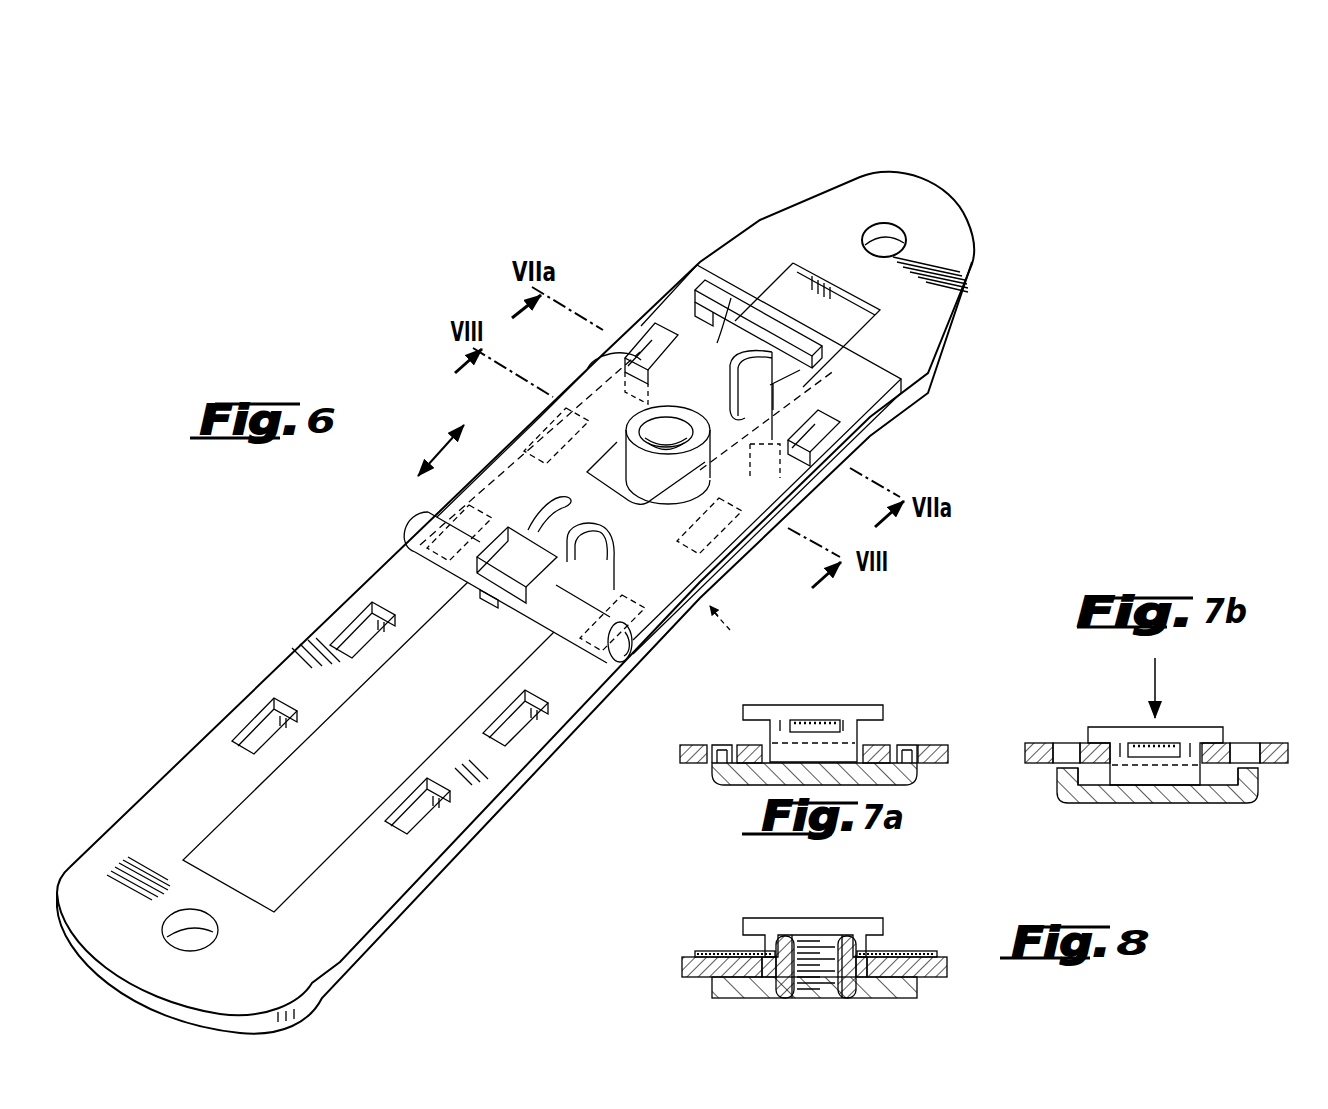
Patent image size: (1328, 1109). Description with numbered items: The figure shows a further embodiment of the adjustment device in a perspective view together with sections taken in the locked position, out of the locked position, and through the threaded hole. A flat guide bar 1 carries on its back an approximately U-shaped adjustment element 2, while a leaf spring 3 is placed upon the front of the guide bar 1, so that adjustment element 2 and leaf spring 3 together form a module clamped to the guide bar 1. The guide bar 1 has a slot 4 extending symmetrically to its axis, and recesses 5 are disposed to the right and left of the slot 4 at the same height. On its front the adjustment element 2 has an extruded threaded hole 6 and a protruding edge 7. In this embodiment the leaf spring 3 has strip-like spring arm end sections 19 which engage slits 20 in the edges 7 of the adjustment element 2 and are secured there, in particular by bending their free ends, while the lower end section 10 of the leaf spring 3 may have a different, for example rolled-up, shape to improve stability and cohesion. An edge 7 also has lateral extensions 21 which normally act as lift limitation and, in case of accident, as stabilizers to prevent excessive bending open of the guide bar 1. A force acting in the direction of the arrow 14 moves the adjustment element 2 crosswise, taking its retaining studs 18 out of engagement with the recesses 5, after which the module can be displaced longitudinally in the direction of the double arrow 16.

In FIG. 6, the guide bar 1 is at (318, 626).
In FIG. 7A, the guide bar 1 is at (678, 753).
In FIG. 7B, the guide bar 1 is at (1023, 760).
In FIG. 8, the guide bar 1 is at (683, 950).
In FIG. 6, the adjustment element 2 is at (725, 631).
In FIG. 7A, the adjustment element 2 is at (710, 776).
In FIG. 7B, the adjustment element 2 is at (1094, 808).
In FIG. 8, the adjustment element 2 is at (710, 992).
In FIG. 6, the leaf spring 3 is at (576, 372).
In FIG. 7A, the leaf spring 3 is at (808, 716).
In FIG. 7B, the leaf spring 3 is at (1162, 739).
In FIG. 8, the leaf spring 3 is at (905, 950).
In FIG. 6, the slot 4 is at (246, 842).
In FIG. 7A, the slot 4 is at (776, 738).
In FIG. 7B, the slot 4 is at (1115, 776).
In FIG. 8, the slot 4 is at (773, 970).
In FIG. 6, the recesses 5 is at (368, 630).
In FIG. 7A, the recesses 5 is at (694, 746).
In FIG. 7B, the recesses 5 is at (1066, 748).
In FIG. 6, the threaded hole 6 is at (686, 464).
In FIG. 8, the threaded hole 6 is at (838, 940).
In FIG. 6, the edge 7 is at (530, 590).
In FIG. 7A, the edge 7 is at (862, 738).
In FIG. 7B, the edge 7 is at (1118, 748).
In FIG. 6, the lower end section 10 is at (412, 531).
In FIG. 6, the arrow 14 is at (758, 318).
In FIG. 7B, the arrow 14 is at (1154, 658).
In FIG. 6, the double arrow 16 is at (484, 471).
In FIG. 6, the retaining studs 18 is at (652, 334).
In FIG. 7A, the retaining studs 18 is at (722, 748).
In FIG. 7B, the retaining studs 18 is at (1063, 775).
In FIG. 6, the spring arm end sections 19 is at (720, 340).
In FIG. 7A, the spring arm end sections 19 is at (815, 726).
In FIG. 7B, the spring arm end sections 19 is at (1154, 750).
In FIG. 6, the slits 20 is at (772, 405).
In FIG. 7B, the slits 20 is at (1175, 760).
In FIG. 6, the lateral extensions 21 is at (699, 290).
In FIG. 7A, the lateral extensions 21 is at (751, 706).
In FIG. 7B, the lateral extensions 21 is at (1098, 730).